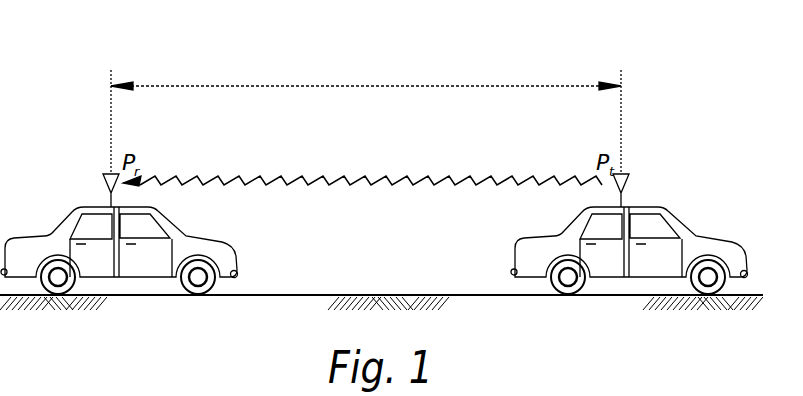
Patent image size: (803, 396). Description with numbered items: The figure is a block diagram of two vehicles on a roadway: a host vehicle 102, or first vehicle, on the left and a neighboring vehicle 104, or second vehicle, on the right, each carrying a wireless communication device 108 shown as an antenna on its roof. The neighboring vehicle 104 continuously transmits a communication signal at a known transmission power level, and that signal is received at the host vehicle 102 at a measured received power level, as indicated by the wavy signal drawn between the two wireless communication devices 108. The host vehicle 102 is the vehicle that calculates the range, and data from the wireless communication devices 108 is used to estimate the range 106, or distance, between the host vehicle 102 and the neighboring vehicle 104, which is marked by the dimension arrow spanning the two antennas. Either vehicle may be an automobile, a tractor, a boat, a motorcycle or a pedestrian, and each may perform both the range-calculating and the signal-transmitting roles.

The host vehicle 102 is at (198, 238).
The neighboring vehicle 104 is at (702, 238).
The range 106 is at (374, 40).
The wireless communication device 108 is at (104, 176).